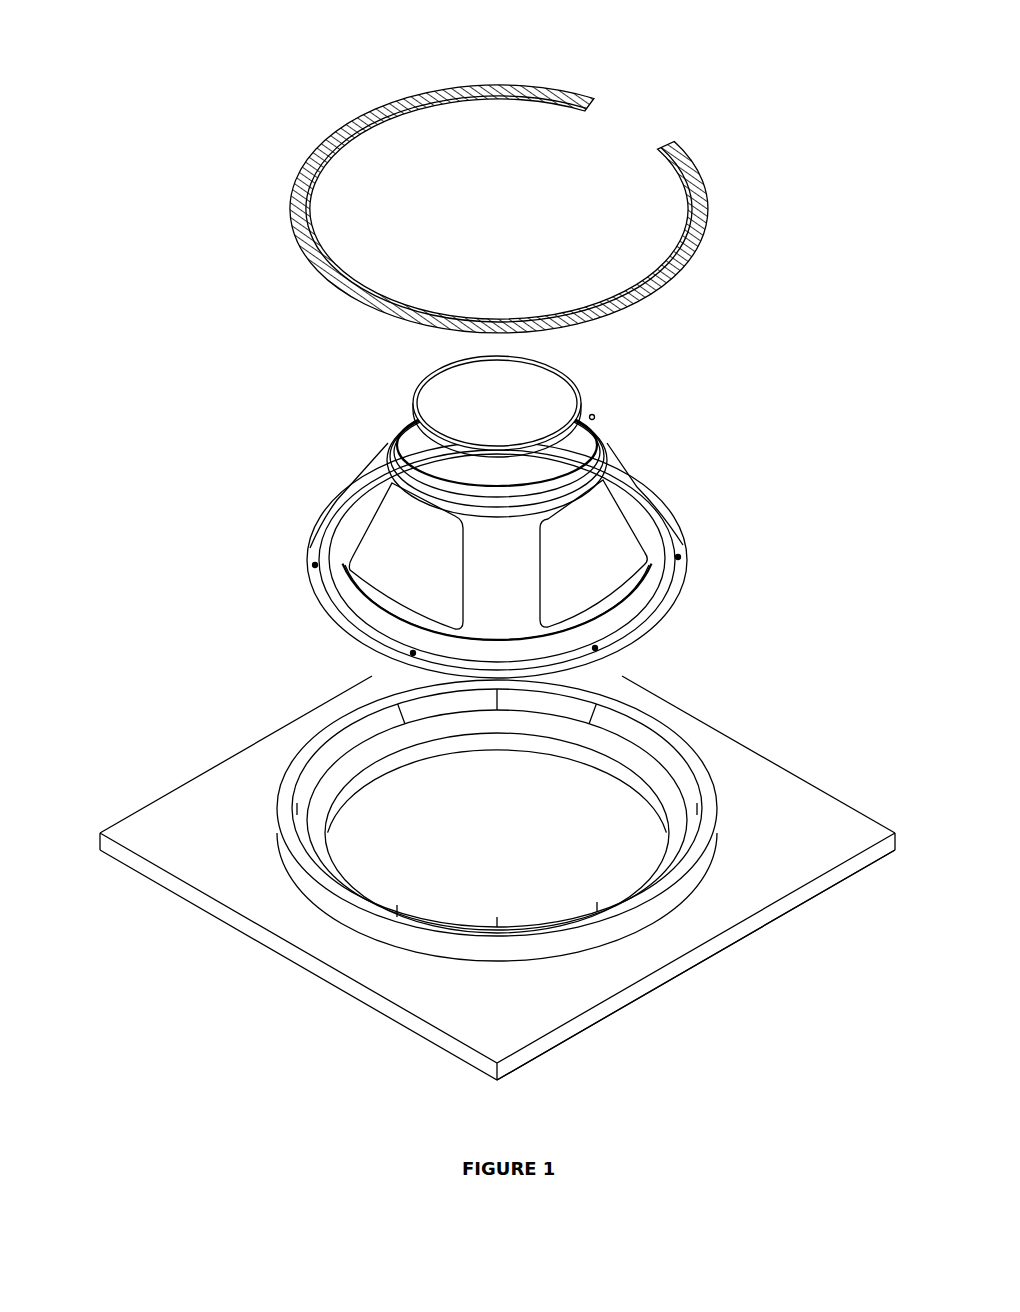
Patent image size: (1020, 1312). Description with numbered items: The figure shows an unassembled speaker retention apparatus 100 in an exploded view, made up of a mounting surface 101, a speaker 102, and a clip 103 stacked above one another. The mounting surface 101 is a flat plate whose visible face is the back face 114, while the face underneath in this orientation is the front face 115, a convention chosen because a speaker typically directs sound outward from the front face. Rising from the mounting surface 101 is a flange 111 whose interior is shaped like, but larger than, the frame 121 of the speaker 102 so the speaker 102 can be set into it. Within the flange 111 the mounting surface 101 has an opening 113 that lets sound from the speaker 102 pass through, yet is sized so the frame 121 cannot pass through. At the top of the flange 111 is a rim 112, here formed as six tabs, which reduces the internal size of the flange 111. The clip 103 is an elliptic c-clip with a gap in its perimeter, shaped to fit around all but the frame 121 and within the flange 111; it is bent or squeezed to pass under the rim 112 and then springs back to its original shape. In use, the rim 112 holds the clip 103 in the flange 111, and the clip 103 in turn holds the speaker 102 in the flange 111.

The unassembled speaker retention apparatus 100 is at (78, 43).
The mounting surface 101 is at (506, 878).
The speaker 102 is at (481, 517).
The clip 103 is at (438, 93).
The flange 111 is at (447, 958).
The rim 112 is at (607, 899).
The opening 113 is at (488, 823).
The back face 114 is at (816, 808).
The front face 115 is at (811, 921).
The frame 121 is at (311, 546).